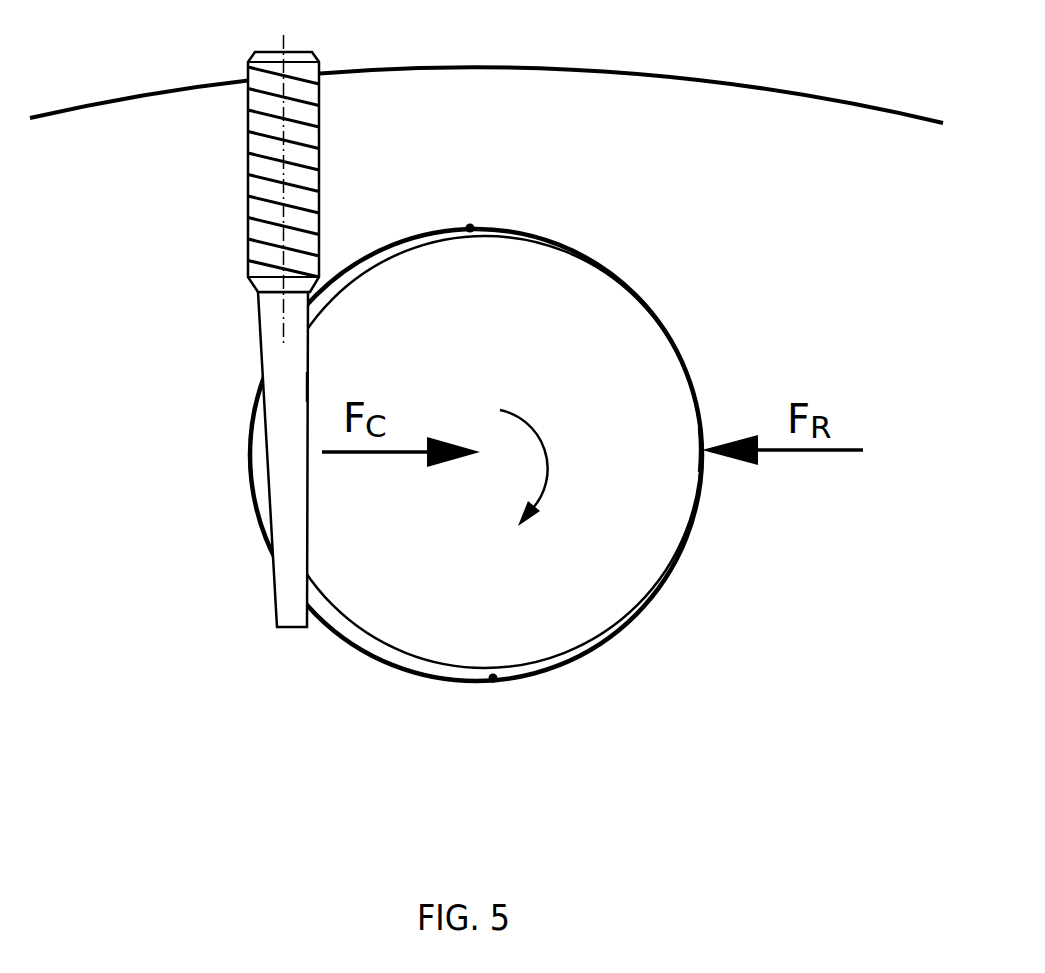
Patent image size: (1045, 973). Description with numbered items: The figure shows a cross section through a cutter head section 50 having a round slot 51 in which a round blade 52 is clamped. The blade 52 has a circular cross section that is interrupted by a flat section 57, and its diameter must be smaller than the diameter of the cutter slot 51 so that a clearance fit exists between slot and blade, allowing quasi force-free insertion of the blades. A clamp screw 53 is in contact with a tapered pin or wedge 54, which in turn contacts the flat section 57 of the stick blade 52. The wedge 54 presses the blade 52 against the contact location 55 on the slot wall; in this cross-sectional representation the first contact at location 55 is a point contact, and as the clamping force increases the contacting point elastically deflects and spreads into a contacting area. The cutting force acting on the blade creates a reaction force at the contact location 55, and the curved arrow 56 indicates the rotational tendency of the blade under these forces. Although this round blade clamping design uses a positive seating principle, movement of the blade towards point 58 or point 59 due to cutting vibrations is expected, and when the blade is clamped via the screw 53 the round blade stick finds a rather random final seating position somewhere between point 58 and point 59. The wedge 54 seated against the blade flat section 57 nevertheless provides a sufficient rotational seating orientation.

The cutter head section 50 is at (702, 82).
The round slot 51 is at (593, 250).
The round blade 52 is at (625, 557).
The clamp screw 53 is at (300, 103).
The tapered pin or wedge 54 is at (283, 428).
The contact location 55 is at (702, 450).
The rotation direction 56 is at (548, 468).
The flat section 57 is at (310, 387).
The point 58 is at (493, 678).
The point 59 is at (470, 227).